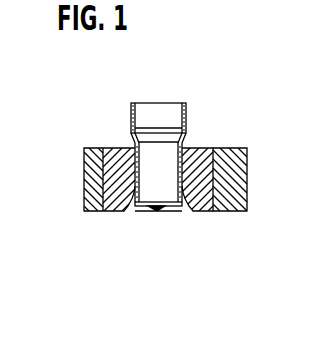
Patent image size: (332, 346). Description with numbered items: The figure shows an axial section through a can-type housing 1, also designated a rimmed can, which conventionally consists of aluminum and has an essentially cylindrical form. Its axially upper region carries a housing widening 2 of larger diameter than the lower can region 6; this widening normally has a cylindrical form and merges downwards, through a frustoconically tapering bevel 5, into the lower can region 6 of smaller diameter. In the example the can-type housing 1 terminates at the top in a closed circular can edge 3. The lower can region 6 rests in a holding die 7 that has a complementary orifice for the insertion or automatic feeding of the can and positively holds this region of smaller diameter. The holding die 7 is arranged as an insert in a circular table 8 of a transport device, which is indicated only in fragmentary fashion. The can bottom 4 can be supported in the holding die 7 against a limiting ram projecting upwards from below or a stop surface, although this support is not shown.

The can-type housing 1 is at (110, 109).
The housing widening 2 is at (131, 117).
The can edge 3 is at (168, 103).
The can bottom 4 is at (152, 208).
The bevel 5 is at (132, 137).
The lower can region 6 is at (122, 208).
The holding die 7 is at (192, 200).
The circular table 8 is at (233, 204).